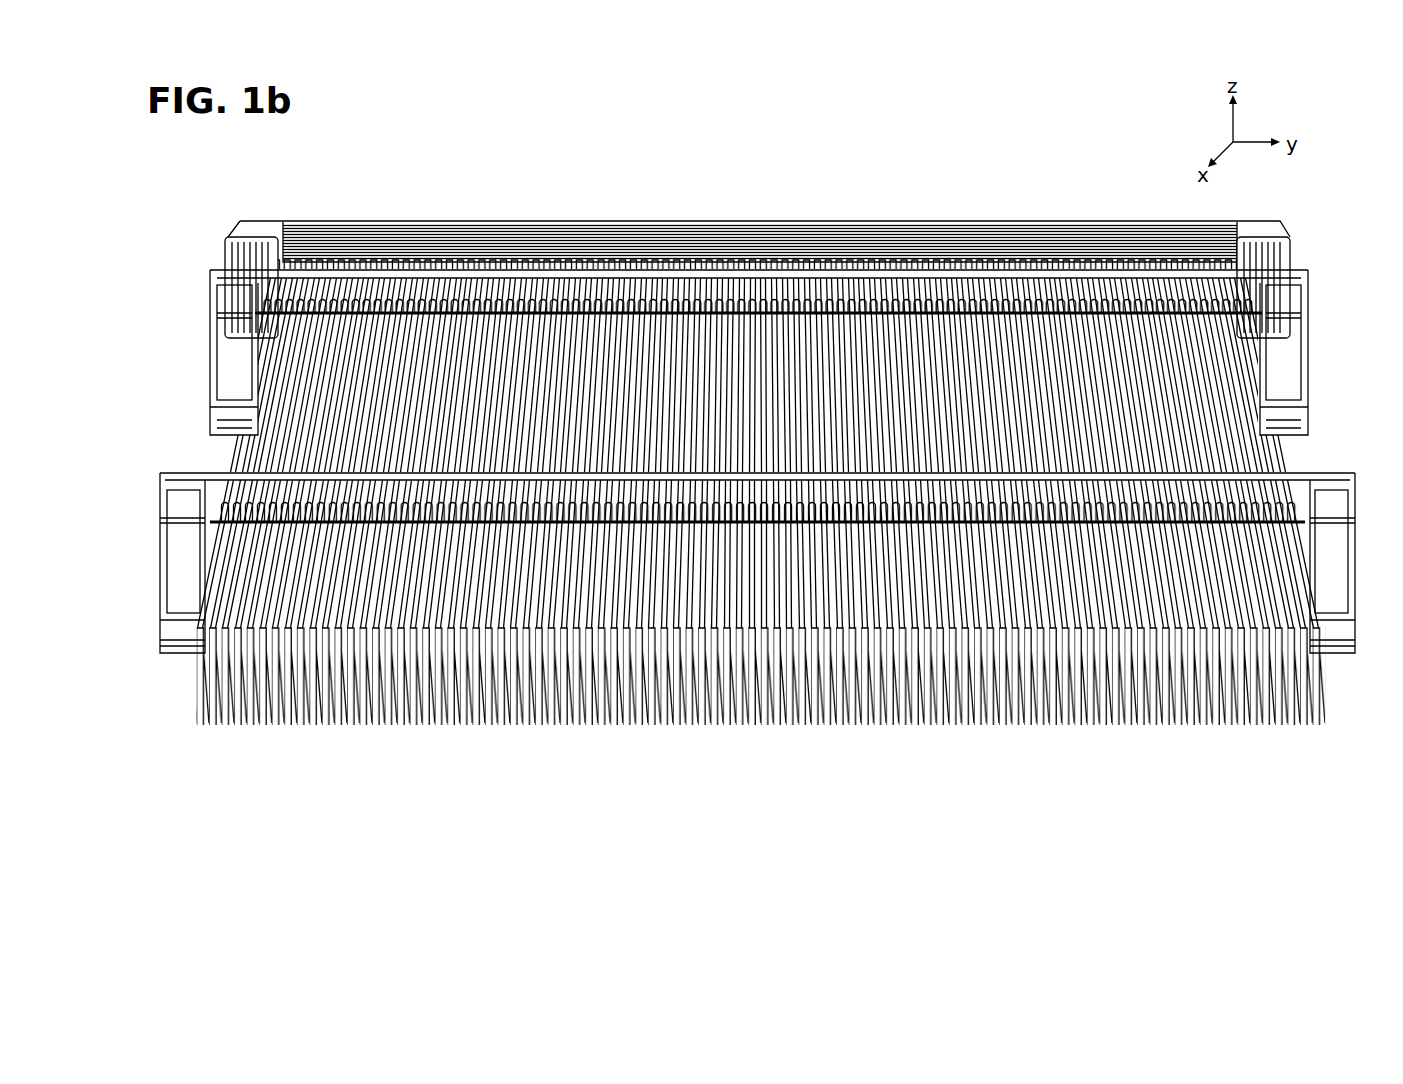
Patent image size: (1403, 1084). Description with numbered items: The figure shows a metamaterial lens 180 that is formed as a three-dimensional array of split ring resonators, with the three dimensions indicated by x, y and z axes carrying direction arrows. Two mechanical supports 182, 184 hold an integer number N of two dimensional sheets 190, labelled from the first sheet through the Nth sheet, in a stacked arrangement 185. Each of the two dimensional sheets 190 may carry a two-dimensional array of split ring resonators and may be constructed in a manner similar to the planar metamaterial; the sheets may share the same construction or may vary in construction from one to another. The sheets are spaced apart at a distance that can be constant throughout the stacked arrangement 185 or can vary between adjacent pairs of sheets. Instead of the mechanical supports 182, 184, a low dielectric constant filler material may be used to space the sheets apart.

The metamaterial lens 180 is at (797, 178).
The mechanical support 182 is at (210, 293).
The mechanical support 184 is at (160, 500).
The stacked arrangement 185 is at (1313, 785).
The two dimensional sheet 190 is at (1314, 727).